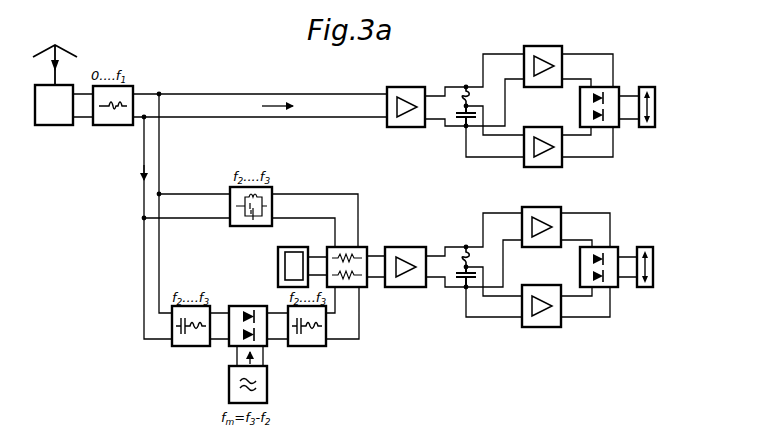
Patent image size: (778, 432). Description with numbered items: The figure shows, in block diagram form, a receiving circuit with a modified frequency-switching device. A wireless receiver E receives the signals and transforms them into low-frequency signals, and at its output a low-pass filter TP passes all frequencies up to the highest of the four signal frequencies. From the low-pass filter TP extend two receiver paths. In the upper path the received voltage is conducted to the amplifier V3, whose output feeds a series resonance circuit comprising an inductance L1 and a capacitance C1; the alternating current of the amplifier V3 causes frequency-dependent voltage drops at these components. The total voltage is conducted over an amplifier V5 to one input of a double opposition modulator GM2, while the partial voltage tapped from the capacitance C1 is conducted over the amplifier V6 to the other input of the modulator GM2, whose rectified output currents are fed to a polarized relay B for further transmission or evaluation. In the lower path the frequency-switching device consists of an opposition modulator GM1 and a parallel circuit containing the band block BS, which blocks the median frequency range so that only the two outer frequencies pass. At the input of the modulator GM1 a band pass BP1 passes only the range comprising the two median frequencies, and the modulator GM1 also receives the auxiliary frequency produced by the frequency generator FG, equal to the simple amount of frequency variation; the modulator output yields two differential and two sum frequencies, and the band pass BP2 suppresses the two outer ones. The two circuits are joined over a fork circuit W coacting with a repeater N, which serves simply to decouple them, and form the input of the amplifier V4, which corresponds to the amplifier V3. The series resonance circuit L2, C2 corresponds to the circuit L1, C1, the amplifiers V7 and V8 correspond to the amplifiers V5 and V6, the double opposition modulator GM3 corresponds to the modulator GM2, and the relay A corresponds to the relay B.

The wireless receiver E is at (54, 105).
The low-pass filter TP is at (113, 113).
The amplifier V3 is at (406, 97).
The inductance L1 is at (465, 87).
The capacitance C1 is at (459, 117).
The amplifier V5 is at (543, 58).
The amplifier V6 is at (543, 138).
The double opposition modulator GM2 is at (610, 98).
The polarized relay B is at (653, 107).
The band block BS is at (251, 214).
The repeater N is at (285, 267).
The fork circuit W is at (350, 257).
The amplifier V4 is at (405, 258).
The inductance L2 is at (465, 248).
The capacitance C2 is at (458, 277).
The amplifier V7 is at (541, 218).
The amplifier V8 is at (541, 297).
The double opposition modulator GM3 is at (609, 257).
The relay A is at (652, 267).
The band pass filter BP1 is at (191, 336).
The opposition modulator GM1 is at (248, 316).
The band pass filter BP2 is at (307, 336).
The frequency generator FG is at (260, 384).